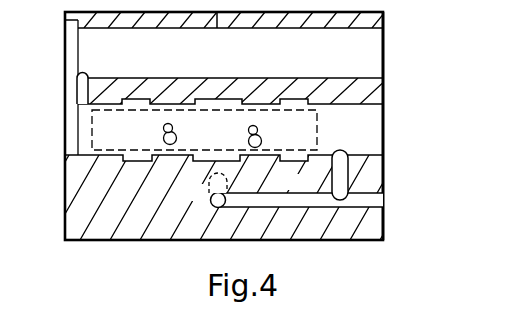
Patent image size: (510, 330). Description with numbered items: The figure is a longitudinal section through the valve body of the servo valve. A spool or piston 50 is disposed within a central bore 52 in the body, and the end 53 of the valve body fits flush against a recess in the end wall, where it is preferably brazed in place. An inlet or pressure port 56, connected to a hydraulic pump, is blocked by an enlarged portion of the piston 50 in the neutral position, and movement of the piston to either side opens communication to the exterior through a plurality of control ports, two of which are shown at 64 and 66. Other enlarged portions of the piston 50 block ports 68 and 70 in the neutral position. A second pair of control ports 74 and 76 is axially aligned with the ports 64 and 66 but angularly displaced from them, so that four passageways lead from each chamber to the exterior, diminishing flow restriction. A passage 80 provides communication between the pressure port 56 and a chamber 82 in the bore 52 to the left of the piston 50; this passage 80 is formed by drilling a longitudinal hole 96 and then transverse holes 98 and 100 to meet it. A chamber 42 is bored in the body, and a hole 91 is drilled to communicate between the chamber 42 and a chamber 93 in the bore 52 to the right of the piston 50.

The chamber 42 is at (85, 57).
The spool or piston 50 is at (318, 125).
The central bore 52 is at (92, 135).
The end of the valve body 53 is at (385, 177).
The inlet or pressure port 56 is at (207, 131).
The control port 64 is at (248, 128).
The control port 66 is at (165, 130).
The port 68 is at (298, 138).
The port 70 is at (128, 143).
The control port 74 is at (247, 140).
The control port 76 is at (177, 139).
The passage 80 is at (385, 194).
The chamber 82 is at (375, 132).
The hole 91 is at (83, 87).
The chamber 93 is at (85, 118).
The longitudinal hole 96 is at (375, 203).
The transverse hole 98 is at (345, 172).
The transverse hole 100 is at (217, 182).